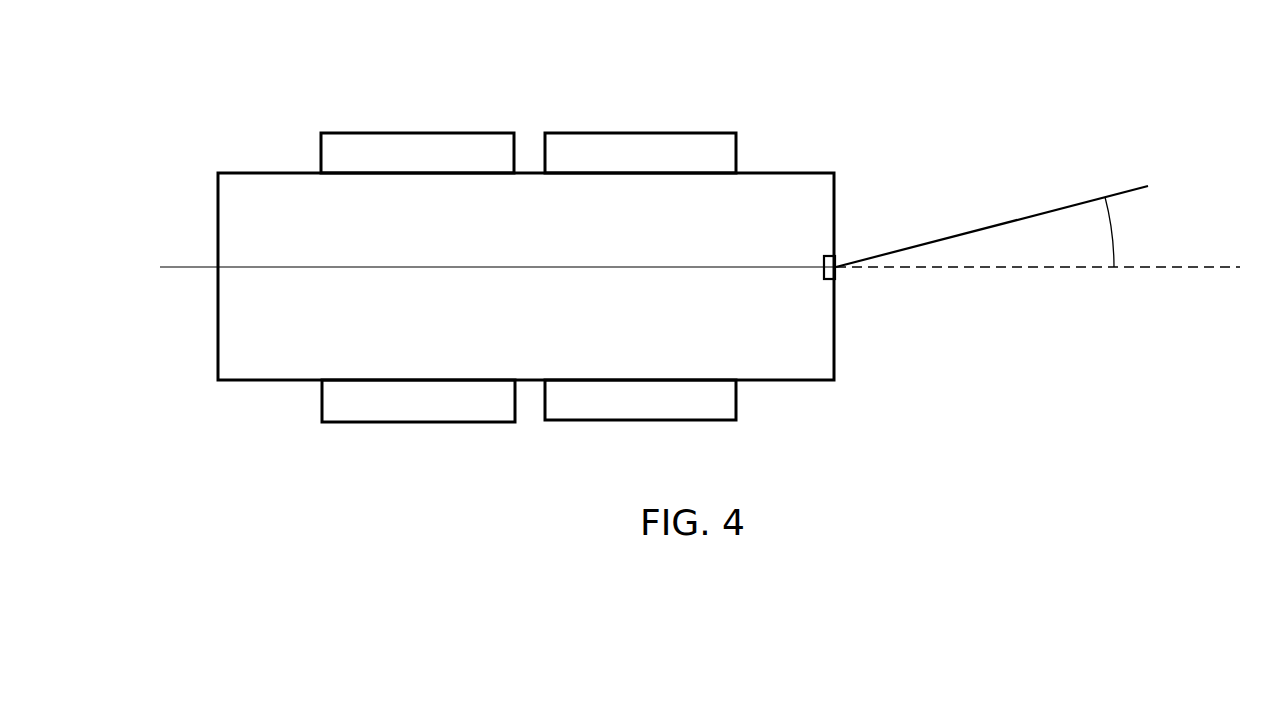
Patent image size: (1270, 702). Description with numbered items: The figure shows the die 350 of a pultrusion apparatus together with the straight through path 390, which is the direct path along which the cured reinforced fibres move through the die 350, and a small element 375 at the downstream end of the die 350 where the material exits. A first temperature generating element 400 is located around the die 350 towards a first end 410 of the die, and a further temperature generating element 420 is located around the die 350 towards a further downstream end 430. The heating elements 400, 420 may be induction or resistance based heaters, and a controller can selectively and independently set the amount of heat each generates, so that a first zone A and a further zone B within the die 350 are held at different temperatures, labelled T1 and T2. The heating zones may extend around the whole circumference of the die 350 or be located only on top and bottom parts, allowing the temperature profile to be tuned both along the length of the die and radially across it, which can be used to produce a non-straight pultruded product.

The die 350 is at (806, 382).
The output aperture / facet 375 is at (836, 270).
The straight through path 390 is at (1205, 270).
The first temperature generating element 400 is at (335, 133).
The first end 410 is at (248, 422).
The further temperature generating element 420 is at (713, 145).
The further downstream end 430 is at (843, 124).